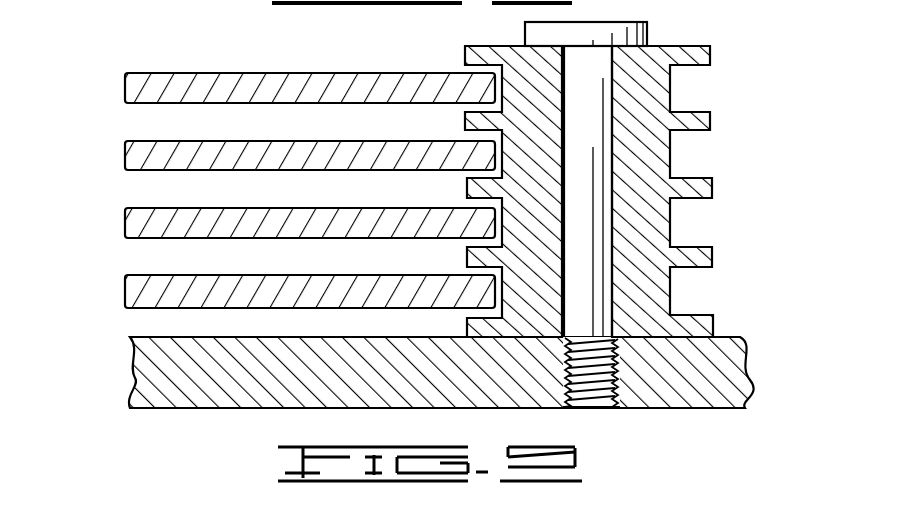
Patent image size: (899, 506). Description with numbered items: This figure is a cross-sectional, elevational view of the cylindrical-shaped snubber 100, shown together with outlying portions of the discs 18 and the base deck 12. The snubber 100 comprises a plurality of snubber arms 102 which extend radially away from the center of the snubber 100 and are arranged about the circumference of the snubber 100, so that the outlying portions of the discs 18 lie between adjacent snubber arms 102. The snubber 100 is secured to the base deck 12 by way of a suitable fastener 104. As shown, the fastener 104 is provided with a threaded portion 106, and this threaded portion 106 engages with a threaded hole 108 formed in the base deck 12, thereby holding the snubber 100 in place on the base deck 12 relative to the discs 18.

The base deck 12 is at (130, 337).
The discs 18 is at (134, 283).
The snubber 100 is at (574, 173).
The snubber arms 102 is at (465, 328).
The fastener 104 is at (610, 32).
The threaded portion 106 is at (653, 408).
The threaded hole 108 is at (595, 410).